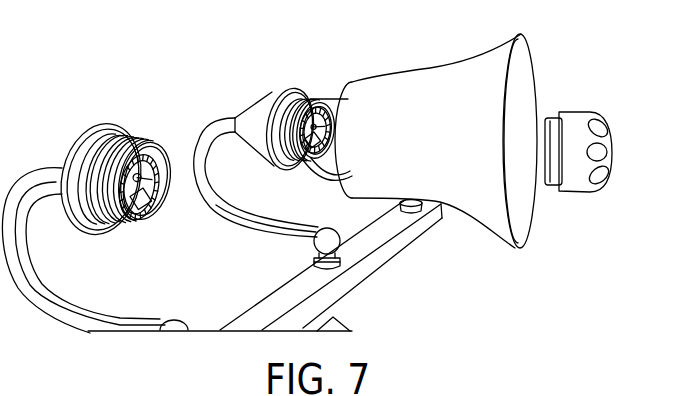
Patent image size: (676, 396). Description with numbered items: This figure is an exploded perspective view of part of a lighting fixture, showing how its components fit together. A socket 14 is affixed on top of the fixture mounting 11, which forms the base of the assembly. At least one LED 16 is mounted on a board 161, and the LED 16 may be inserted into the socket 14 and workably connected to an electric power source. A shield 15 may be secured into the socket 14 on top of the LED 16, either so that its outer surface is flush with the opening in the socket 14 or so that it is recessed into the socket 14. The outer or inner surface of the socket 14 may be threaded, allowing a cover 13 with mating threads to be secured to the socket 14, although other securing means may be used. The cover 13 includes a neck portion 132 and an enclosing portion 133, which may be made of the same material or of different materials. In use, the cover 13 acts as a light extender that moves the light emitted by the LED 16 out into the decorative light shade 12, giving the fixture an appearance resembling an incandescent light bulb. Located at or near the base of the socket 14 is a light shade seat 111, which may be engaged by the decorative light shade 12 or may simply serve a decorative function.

The fixture mounting 11 is at (300, 288).
The light shade seat 111 is at (82, 147).
The decorative light shade 12 is at (448, 73).
The cover 13 is at (585, 153).
The neck portion 132 is at (553, 120).
The enclosing portion 133 is at (590, 185).
The socket 14 is at (115, 185).
The shield 15 is at (320, 100).
The LED 16 is at (148, 200).
The board 161 is at (118, 228).